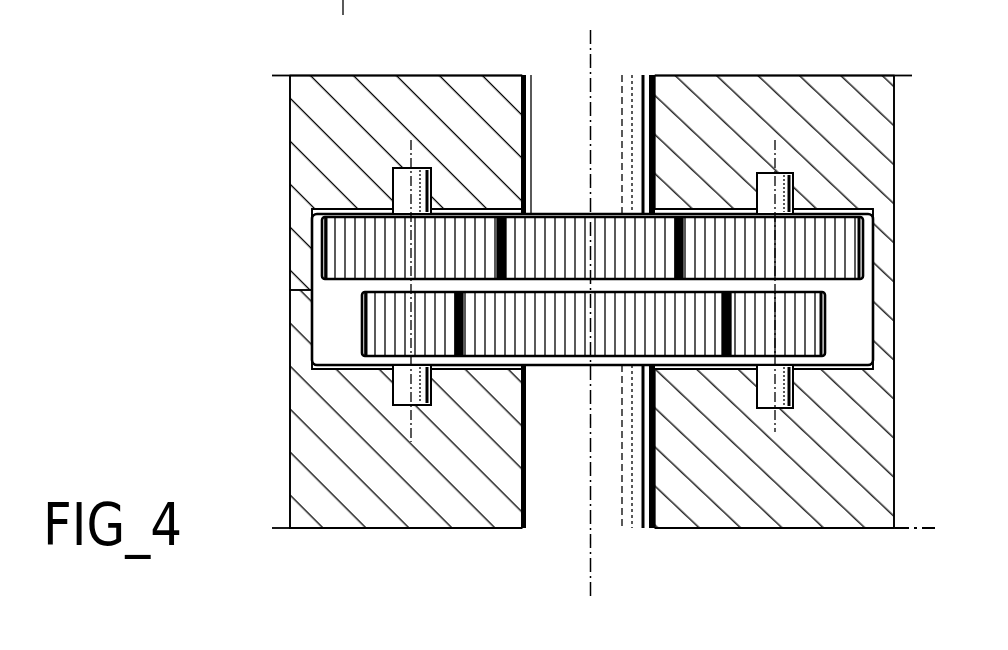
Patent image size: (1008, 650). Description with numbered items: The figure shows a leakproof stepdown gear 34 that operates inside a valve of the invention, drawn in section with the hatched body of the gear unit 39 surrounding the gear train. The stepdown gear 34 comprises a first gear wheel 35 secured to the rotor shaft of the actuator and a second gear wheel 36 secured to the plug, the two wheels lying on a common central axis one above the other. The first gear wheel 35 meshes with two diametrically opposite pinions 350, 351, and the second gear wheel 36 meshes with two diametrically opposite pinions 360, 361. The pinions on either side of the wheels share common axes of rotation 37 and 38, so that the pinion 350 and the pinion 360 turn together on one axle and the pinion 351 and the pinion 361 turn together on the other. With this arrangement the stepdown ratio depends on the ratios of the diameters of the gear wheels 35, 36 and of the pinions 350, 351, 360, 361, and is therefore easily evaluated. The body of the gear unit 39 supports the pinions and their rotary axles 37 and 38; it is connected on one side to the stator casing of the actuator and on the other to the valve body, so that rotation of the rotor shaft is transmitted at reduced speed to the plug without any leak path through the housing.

The stepdown gear 34 is at (572, 50).
The first gear wheel 35 is at (553, 233).
The second gear wheel 36 is at (567, 340).
The common axis of rotation 37 is at (785, 172).
The common axis of rotation 38 is at (413, 170).
The body of the gear unit 39 is at (323, 422).
The pinion 350 is at (835, 243).
The pinion 351 is at (813, 333).
The pinion 360 is at (338, 250).
The pinion 361 is at (378, 327).